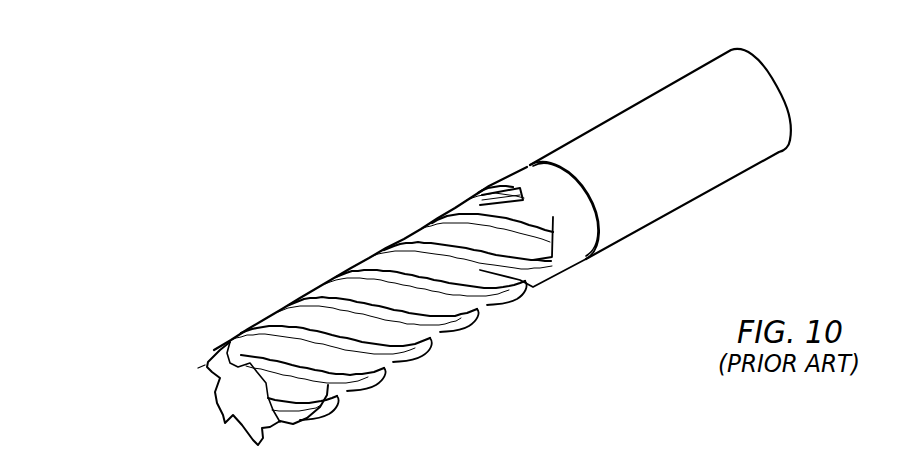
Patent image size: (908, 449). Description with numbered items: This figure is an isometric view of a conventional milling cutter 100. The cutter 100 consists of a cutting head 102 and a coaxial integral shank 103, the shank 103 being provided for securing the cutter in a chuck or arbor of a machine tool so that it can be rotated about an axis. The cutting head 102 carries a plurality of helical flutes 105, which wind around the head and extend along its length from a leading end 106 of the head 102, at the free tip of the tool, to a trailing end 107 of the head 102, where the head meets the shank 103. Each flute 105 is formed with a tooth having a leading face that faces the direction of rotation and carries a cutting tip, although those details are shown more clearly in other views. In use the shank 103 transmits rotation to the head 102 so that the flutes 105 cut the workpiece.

The milling cutter 100 is at (164, 166).
The cutting head 102 is at (383, 241).
The shank 103 is at (618, 133).
The helical flutes 105 is at (307, 327).
The leading end 106 is at (222, 377).
The trailing end 107 is at (500, 187).